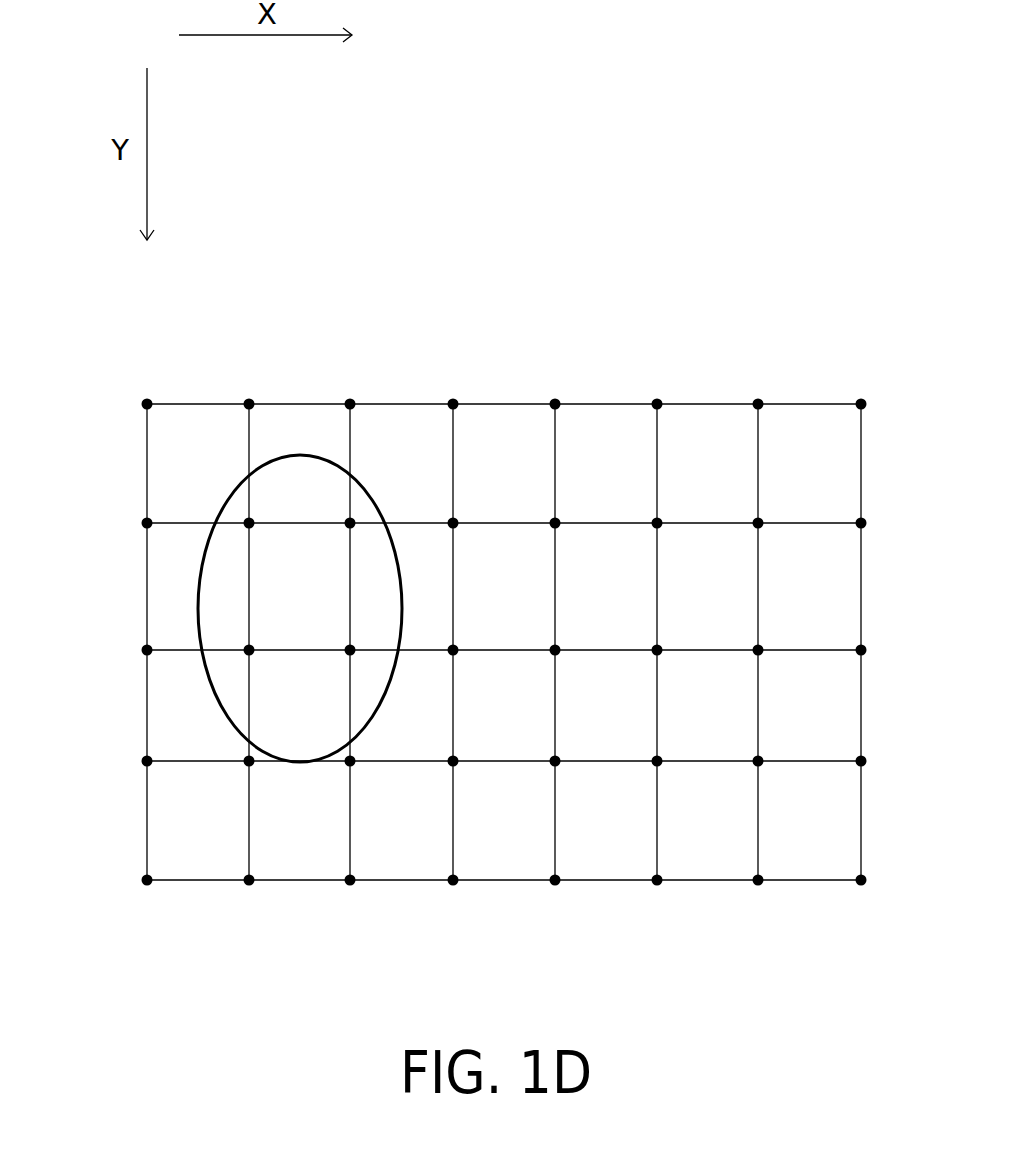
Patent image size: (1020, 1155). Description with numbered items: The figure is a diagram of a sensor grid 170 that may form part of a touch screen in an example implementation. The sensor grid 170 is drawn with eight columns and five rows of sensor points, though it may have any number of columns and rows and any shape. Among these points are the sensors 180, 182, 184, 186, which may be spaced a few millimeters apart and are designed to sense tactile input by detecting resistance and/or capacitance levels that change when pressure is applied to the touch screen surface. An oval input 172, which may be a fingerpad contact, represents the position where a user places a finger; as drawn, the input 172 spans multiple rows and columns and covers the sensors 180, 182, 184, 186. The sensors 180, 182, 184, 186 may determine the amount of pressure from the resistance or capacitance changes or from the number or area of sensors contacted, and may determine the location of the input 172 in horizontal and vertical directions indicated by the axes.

The sensor grid 170 is at (553, 250).
The input 172 is at (300, 455).
The sensor 180 is at (249, 523).
The sensor 182 is at (351, 523).
The sensor 184 is at (249, 651).
The sensor 186 is at (351, 651).